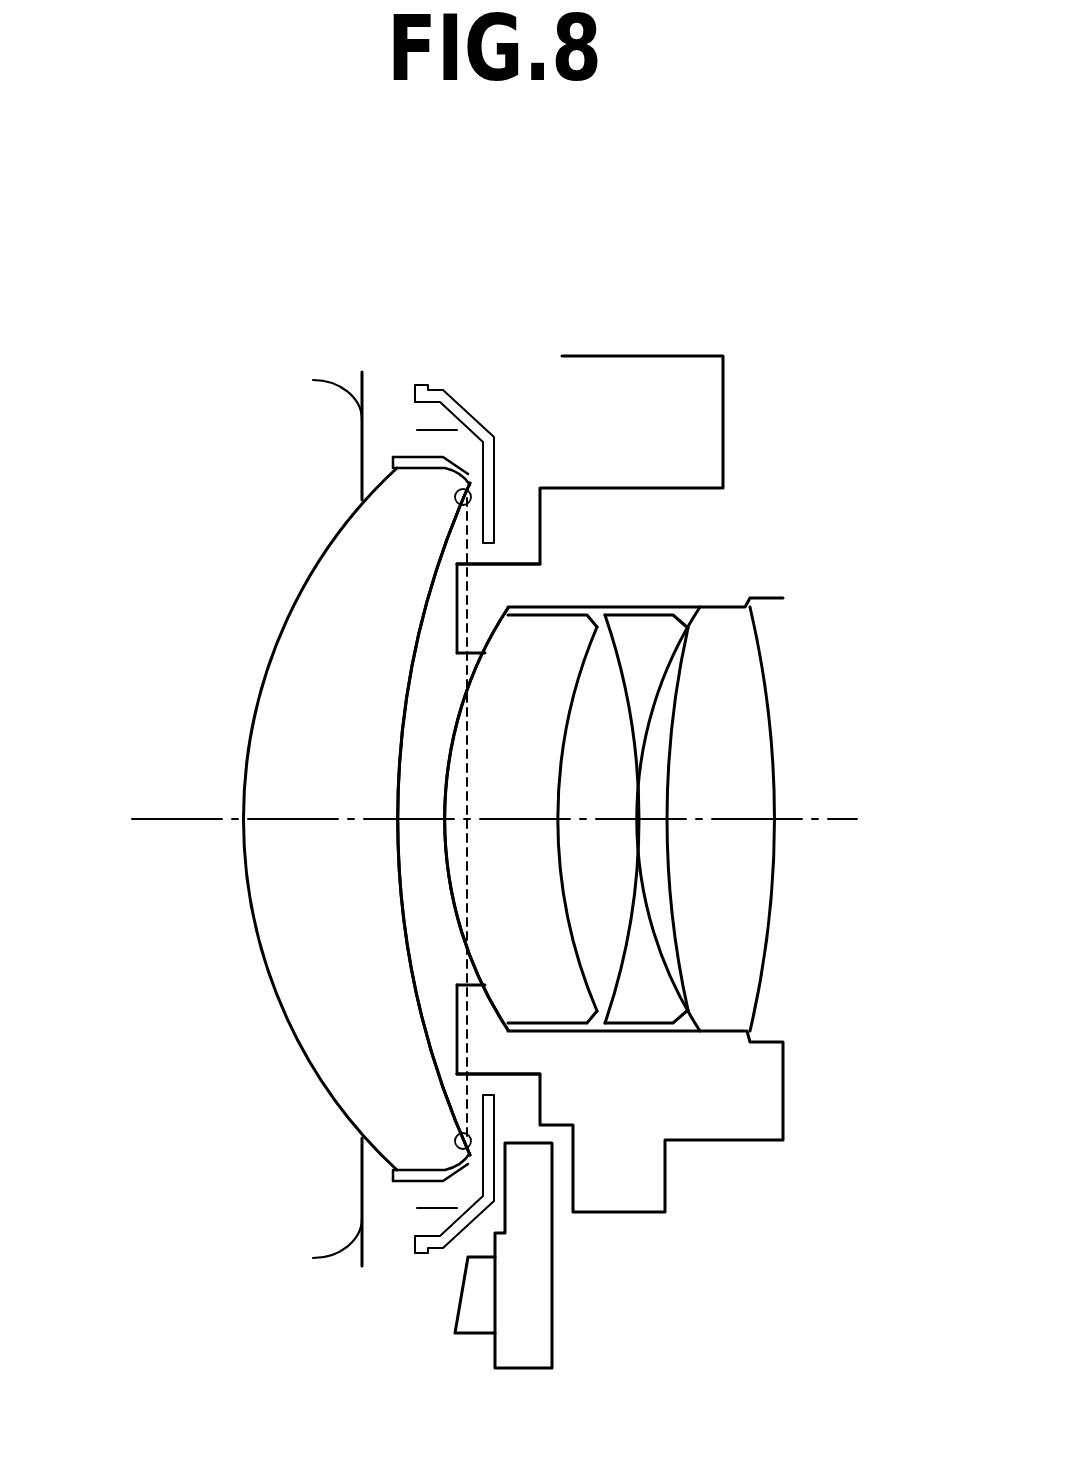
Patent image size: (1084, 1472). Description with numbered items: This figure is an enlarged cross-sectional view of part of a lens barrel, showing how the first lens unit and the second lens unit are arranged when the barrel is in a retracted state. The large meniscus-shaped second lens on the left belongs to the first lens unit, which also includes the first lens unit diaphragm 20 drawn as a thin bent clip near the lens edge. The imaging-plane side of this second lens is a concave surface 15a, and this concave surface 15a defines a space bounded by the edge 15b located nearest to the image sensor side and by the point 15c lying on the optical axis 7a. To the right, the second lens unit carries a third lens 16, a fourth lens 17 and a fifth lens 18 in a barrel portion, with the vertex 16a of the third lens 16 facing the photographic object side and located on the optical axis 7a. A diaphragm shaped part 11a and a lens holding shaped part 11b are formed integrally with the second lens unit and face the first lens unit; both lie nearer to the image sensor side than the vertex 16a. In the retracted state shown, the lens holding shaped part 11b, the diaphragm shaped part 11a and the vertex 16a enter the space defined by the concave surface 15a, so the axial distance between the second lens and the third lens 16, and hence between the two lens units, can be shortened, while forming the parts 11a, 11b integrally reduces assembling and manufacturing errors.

The optical axis 7a is at (833, 822).
The diaphragm shaped part 11a is at (487, 652).
The lens holding shaped part 11b is at (457, 580).
The concave surface 15a is at (410, 987).
The edge 15b is at (462, 517).
The point 15c is at (397, 822).
The third lens 16 is at (528, 778).
The vertex 16a is at (443, 819).
The fourth lens 17 is at (632, 717).
The fifth lens 18 is at (733, 640).
The first lens unit diaphragm 20 is at (470, 400).